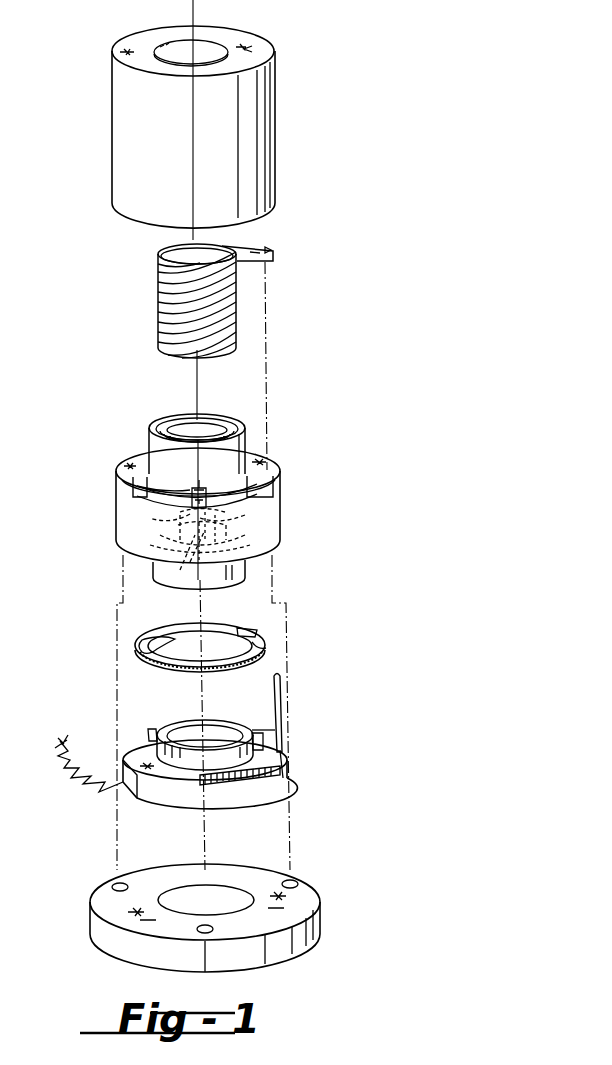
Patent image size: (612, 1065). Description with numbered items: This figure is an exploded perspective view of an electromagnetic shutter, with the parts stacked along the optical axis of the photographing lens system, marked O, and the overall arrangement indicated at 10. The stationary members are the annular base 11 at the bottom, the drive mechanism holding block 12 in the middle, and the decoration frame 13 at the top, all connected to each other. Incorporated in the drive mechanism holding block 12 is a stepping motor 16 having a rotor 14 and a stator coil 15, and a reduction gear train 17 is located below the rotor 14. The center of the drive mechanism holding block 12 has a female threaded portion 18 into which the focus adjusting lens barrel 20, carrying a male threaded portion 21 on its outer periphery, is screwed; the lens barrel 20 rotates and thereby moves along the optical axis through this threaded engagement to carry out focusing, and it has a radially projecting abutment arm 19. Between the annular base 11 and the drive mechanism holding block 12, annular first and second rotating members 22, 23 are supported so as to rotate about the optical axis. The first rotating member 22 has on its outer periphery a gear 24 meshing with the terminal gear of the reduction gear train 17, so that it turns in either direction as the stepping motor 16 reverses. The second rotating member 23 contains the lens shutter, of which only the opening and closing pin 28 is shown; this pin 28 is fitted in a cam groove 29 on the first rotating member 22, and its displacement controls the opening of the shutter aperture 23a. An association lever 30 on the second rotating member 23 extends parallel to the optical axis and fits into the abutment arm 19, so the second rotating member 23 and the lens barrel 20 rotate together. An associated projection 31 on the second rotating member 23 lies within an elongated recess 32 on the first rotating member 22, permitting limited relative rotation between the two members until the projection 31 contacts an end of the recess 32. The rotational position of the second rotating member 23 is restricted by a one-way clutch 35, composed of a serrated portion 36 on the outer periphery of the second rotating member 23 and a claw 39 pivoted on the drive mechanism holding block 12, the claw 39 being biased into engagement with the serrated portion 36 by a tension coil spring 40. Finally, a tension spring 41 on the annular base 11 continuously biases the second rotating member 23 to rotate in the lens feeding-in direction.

The assembly 10 is at (196, 4).
The annular base 11 is at (322, 917).
The drive mechanism holding block 12 is at (282, 484).
The decoration frame 13 is at (275, 150).
The rotor 14 is at (195, 513).
The stator coil 15 is at (140, 497).
The stepping motor 16 is at (58, 484).
The reduction gear train 17 is at (184, 556).
The female threaded portion 18 is at (218, 417).
The abutment arm 19 is at (262, 240).
The focus adjusting lens barrel 20 is at (165, 252).
The male threaded portion 21 is at (162, 310).
The first rotating member 22 is at (160, 668).
The second rotating member 23 is at (178, 790).
The shutter aperture 23a is at (213, 727).
The gear 24 is at (195, 672).
The opening and closing pin 28 is at (152, 728).
The cam groove 29 is at (150, 632).
The association lever 30 is at (274, 690).
The associated projection 31 is at (262, 738).
The elongated recess 32 is at (240, 625).
The one-way clutch 35 is at (295, 788).
The serrated portion 36 is at (282, 772).
The claw 39 is at (272, 545).
The tension coil spring 40 is at (268, 517).
The tension spring 41 is at (84, 782).